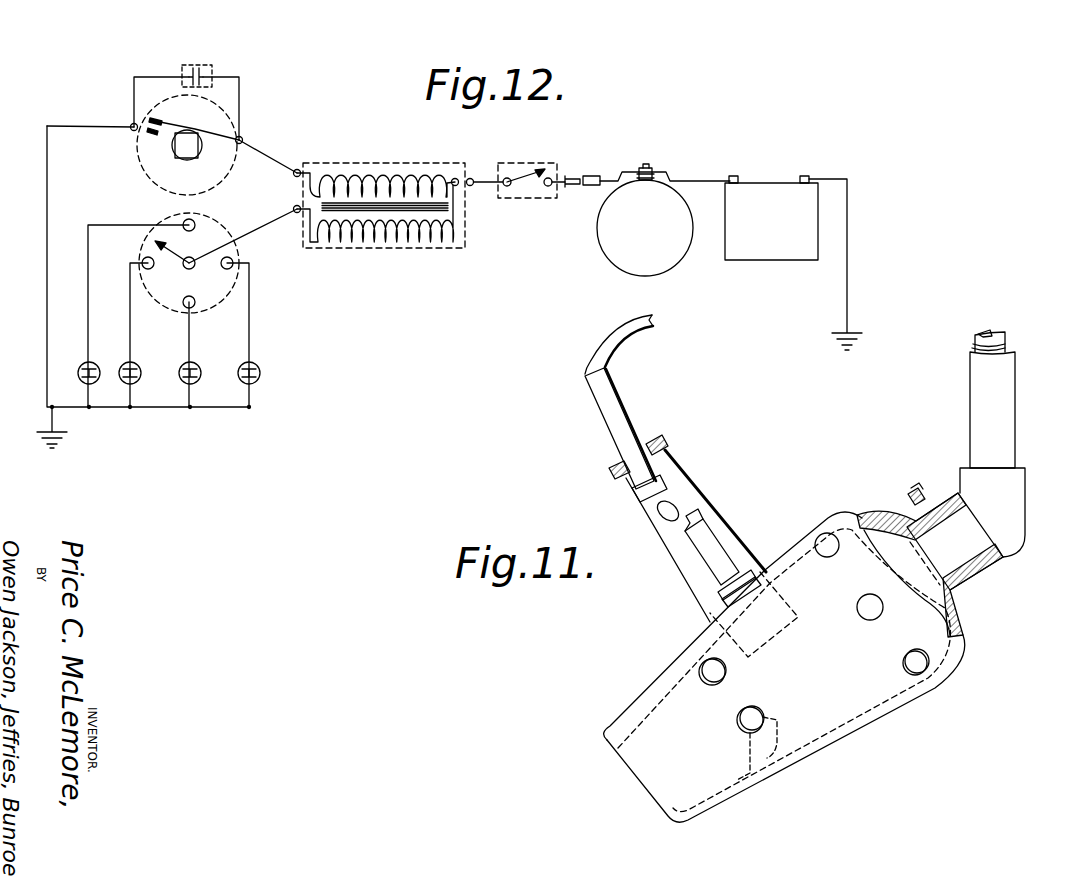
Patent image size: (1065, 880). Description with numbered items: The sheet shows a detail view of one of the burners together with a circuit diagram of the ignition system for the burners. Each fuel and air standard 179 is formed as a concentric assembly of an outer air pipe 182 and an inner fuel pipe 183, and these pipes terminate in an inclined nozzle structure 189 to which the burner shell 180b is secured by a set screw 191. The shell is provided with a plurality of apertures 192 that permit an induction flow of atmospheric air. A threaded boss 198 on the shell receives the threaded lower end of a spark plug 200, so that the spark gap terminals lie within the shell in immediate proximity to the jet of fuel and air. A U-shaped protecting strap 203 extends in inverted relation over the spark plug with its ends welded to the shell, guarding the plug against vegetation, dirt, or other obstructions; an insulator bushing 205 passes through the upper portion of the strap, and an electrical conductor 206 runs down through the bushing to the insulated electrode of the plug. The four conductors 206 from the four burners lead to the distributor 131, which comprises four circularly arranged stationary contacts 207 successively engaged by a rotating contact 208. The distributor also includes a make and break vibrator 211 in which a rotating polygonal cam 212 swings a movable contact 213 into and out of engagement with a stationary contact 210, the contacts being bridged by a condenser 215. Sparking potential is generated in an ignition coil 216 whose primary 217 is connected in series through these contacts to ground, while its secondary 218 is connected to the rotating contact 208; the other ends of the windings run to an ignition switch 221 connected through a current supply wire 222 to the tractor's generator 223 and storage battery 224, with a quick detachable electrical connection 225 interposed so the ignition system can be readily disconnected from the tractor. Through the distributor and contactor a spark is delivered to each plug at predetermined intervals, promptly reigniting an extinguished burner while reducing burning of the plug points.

In FIG. 12, the distributor 131 is at (236, 293).
In FIG. 11, the fuel and air standard 179 is at (978, 392).
In FIG. 11, the housing 180b is at (800, 552).
In FIG. 11, the outer air pipe 182 is at (972, 347).
In FIG. 11, the inner fuel pipe 183 is at (985, 334).
In FIG. 11, the inclined nozzle structure 189 is at (972, 553).
In FIG. 11, the set screw 191 is at (913, 492).
In FIG. 11, the apertures 192 is at (902, 660).
In FIG. 11, the threaded boss 198 is at (724, 603).
In FIG. 12, the spark plug 200 is at (124, 382).
In FIG. 11, the spark plug 200 is at (712, 568).
In FIG. 11, the U-shaped protecting strap 203 is at (673, 474).
In FIG. 11, the insulator bushing 205 is at (616, 414).
In FIG. 12, the electrical conductor 206 is at (88, 318).
In FIG. 11, the electrical conductor 206 is at (612, 337).
In FIG. 12, the stationary contacts 207 is at (150, 270).
In FIG. 12, the rotating contact 208 is at (153, 242).
In FIG. 12, the breaker contacts 210 is at (150, 128).
In FIG. 12, the make and break vibrator 211 is at (140, 166).
In FIG. 12, the rotating polygonal cam 212 is at (187, 156).
In FIG. 12, the movable contact 213 is at (171, 128).
In FIG. 12, the condenser 215 is at (182, 70).
In FIG. 12, the ignition coil 216 is at (348, 163).
In FIG. 12, the primary 217 is at (400, 178).
In FIG. 12, the secondary 218 is at (388, 242).
In FIG. 12, the ignition switch 221 is at (521, 163).
In FIG. 12, the current supply wire 222 is at (626, 168).
In FIG. 12, the generator 223 is at (626, 250).
In FIG. 12, the storage battery 224 is at (775, 238).
In FIG. 12, the quick detachable electrical connection 225 is at (577, 188).